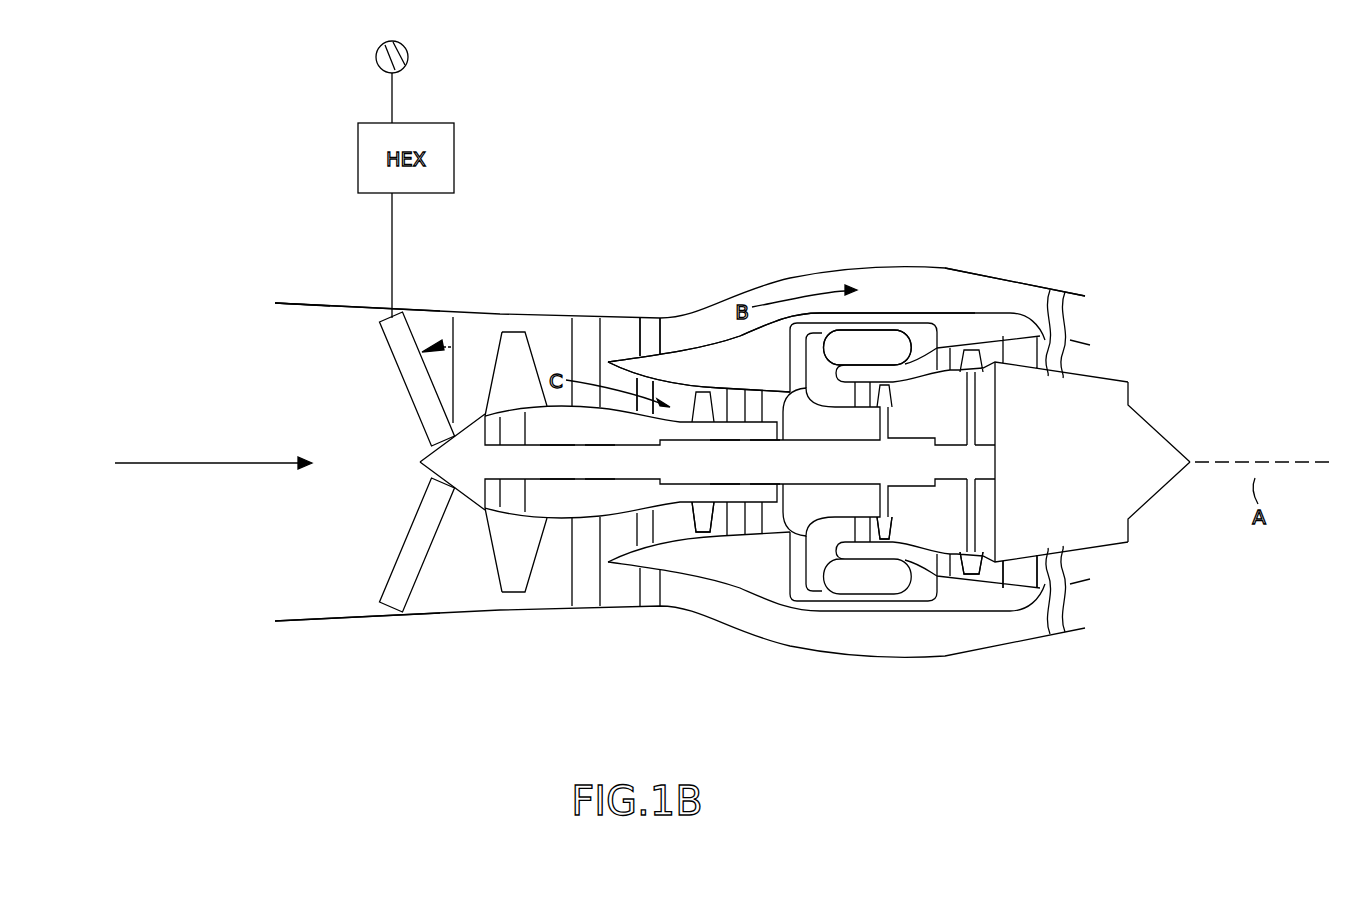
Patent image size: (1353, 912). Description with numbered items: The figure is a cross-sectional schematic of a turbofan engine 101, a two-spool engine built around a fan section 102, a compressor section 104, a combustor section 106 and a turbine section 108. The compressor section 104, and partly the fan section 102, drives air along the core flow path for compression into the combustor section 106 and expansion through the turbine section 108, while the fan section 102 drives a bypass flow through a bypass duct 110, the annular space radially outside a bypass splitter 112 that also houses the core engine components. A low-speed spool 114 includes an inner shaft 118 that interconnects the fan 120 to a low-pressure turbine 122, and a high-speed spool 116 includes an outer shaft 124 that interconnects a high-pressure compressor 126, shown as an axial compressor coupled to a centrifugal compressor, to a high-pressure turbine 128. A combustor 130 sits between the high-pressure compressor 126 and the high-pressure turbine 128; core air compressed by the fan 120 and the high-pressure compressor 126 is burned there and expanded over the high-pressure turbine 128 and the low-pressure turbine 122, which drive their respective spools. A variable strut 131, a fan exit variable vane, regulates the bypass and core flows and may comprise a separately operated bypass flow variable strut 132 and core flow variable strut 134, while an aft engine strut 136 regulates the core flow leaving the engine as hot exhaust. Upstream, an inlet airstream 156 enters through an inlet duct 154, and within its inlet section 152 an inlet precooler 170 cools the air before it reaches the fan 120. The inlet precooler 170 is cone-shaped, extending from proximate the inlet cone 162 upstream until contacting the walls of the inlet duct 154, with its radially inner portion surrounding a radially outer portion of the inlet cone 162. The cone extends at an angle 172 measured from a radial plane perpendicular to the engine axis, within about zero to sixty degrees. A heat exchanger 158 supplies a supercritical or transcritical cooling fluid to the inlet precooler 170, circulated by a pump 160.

The turbofan engine 101 is at (165, 245).
The fan section 102 is at (460, 293).
The compressor section 104 is at (672, 258).
The combustor section 106 is at (808, 258).
The turbine section 108 is at (878, 270).
The bypass duct 110 is at (1008, 292).
The bypass splitter 112 is at (756, 378).
The low-speed spool 114 is at (556, 470).
The high-speed spool 116 is at (724, 470).
The inner shaft 118 is at (598, 470).
The fan 120 is at (497, 540).
The low-pressure turbine 122 is at (972, 568).
The outer shaft 124 is at (765, 470).
The high-pressure compressor 126 is at (702, 500).
The high-pressure turbine 128 is at (887, 520).
The combustor 130 is at (884, 359).
The variable strut 131 is at (668, 332).
The bypass flow variable strut 132 is at (652, 333).
The core flow variable strut 134 is at (646, 384).
The aft engine strut 136 is at (1017, 580).
The inlet section 152 is at (295, 630).
The inlet duct 154 is at (295, 303).
The inlet airstream 156 is at (186, 468).
The heat exchanger 158 is at (358, 160).
The pump 160 is at (376, 57).
The inlet cone 162 is at (430, 470).
The inlet precooler 170 is at (395, 360).
The angle 172 is at (434, 345).